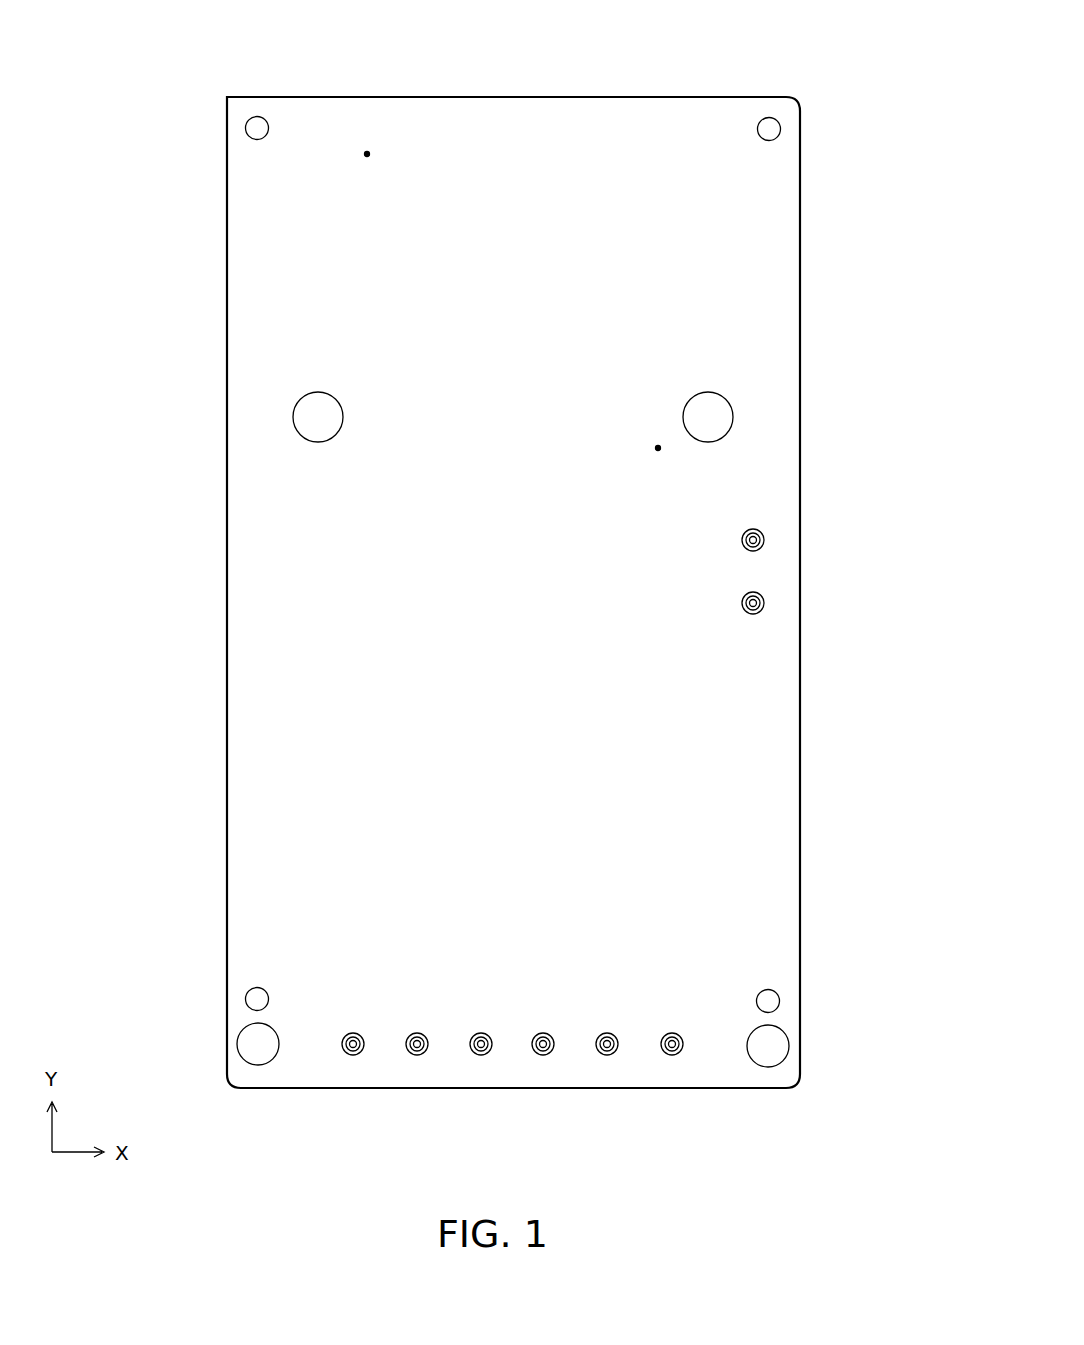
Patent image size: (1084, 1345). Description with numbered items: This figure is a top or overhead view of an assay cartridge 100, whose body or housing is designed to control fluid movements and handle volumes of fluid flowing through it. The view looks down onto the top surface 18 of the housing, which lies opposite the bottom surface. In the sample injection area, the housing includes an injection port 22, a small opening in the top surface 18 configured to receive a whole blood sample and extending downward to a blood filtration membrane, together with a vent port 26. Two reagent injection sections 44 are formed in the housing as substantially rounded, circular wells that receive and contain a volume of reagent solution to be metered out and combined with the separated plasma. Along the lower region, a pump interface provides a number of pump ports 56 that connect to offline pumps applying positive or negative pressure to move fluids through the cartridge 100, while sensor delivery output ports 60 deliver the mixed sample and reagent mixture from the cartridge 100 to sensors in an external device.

The cartridge 100 is at (849, 66).
The top surface 18 is at (697, 113).
The vent port 26 is at (371, 141).
The injection port 22 is at (661, 469).
The reagent injection section 44 is at (293, 412).
The pump port 56 is at (349, 1054).
The sensor delivery output port 60 is at (478, 1055).